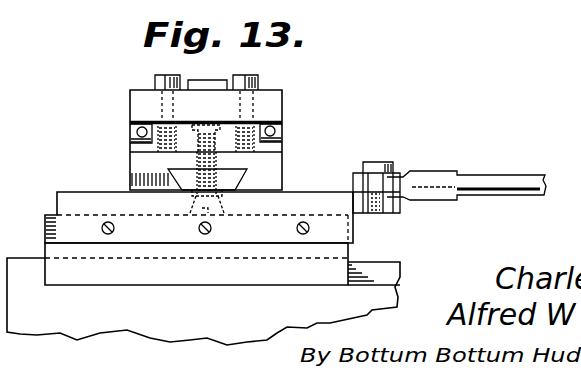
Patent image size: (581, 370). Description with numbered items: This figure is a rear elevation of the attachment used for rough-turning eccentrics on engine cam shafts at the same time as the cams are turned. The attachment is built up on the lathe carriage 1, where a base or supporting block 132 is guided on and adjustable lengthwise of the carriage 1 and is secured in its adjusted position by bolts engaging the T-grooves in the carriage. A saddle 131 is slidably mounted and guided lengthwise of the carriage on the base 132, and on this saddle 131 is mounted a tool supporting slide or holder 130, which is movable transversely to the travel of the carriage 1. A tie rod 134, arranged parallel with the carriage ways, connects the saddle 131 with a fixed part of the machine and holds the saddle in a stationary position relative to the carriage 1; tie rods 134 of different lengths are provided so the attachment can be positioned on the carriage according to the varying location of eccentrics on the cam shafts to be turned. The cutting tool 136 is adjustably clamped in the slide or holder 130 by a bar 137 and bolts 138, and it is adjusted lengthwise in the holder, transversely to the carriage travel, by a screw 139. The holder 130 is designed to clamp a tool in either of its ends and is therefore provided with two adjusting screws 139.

The carriage 1 is at (61, 333).
The tool supporting slide or holder 130 is at (140, 160).
The saddle 131 is at (78, 187).
The base or supporting block 132 is at (181, 284).
The tie rod 134 is at (507, 164).
The cutting tool 136 is at (279, 128).
The bar 137 is at (203, 98).
The bolts 138 is at (163, 76).
The adjusting screw 139 is at (134, 130).